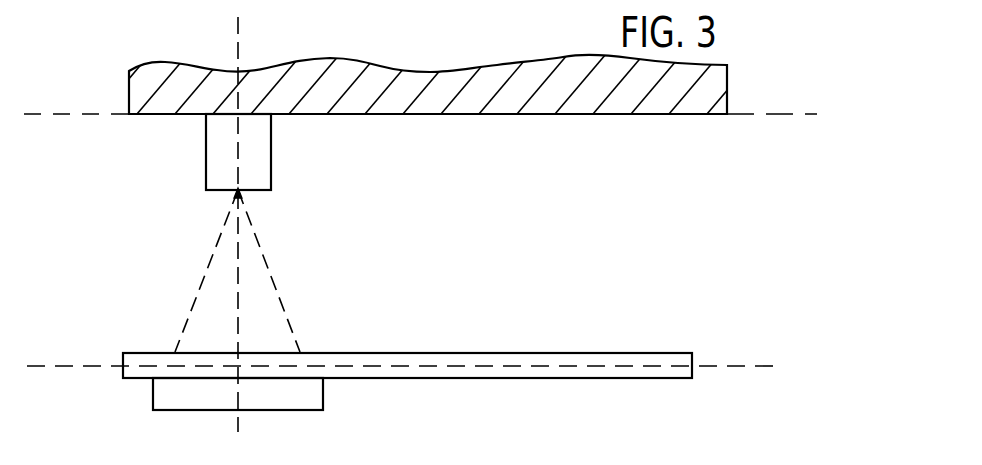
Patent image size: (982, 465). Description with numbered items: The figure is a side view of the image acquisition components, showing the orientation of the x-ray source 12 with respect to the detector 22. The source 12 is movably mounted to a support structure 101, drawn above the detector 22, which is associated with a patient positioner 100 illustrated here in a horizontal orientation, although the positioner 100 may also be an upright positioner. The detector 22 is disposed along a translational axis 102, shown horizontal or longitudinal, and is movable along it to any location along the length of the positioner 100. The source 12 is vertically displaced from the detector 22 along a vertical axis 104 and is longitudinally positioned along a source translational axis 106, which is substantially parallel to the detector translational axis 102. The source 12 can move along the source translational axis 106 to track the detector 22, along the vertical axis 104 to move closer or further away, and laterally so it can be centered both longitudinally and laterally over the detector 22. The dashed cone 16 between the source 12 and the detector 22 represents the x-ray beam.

The x-ray source 12 is at (271, 147).
The x-ray beam 16 is at (268, 268).
The detector 22 is at (325, 392).
The patient positioner 100 is at (403, 352).
The support structure 101 is at (427, 116).
The translational axis 102 is at (747, 365).
The vertical axis 104 is at (242, 37).
The source translational axis 106 is at (72, 113).